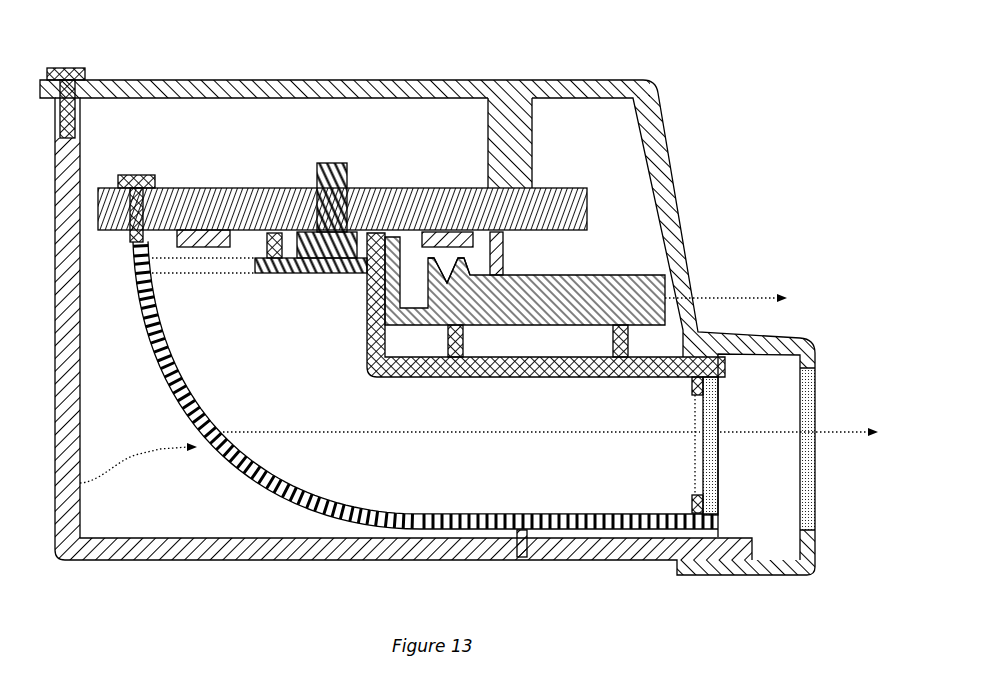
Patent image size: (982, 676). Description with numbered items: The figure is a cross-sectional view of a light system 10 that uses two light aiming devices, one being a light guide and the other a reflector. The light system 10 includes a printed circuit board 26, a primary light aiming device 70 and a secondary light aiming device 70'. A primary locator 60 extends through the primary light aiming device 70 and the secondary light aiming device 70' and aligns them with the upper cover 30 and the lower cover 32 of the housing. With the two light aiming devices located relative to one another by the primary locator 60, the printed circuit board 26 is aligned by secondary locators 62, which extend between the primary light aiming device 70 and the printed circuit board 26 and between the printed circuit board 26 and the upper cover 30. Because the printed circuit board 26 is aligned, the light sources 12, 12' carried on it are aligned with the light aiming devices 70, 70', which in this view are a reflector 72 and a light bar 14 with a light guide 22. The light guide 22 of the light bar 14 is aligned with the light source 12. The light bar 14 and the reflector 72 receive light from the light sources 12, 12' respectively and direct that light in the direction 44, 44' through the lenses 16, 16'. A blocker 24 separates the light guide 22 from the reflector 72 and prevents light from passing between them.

The light system 10 is at (730, 167).
The light source 12 is at (462, 164).
The light source 12' is at (448, 243).
The light bar 14 is at (608, 275).
The lens 16 is at (435, 315).
The lens 16' is at (764, 471).
The light guide 22 is at (462, 262).
The blocker 24 is at (548, 378).
The printed circuit board 26 is at (98, 208).
The upper cover 30 is at (128, 88).
The lower cover 32 is at (192, 548).
The direction 44 is at (726, 284).
The direction 44' is at (799, 417).
The primary locator 60 is at (718, 470).
The secondary locator 62 is at (340, 162).
The primary light aiming device 70 is at (372, 309).
The secondary light aiming device 70' is at (107, 468).
The reflector 72 is at (322, 510).